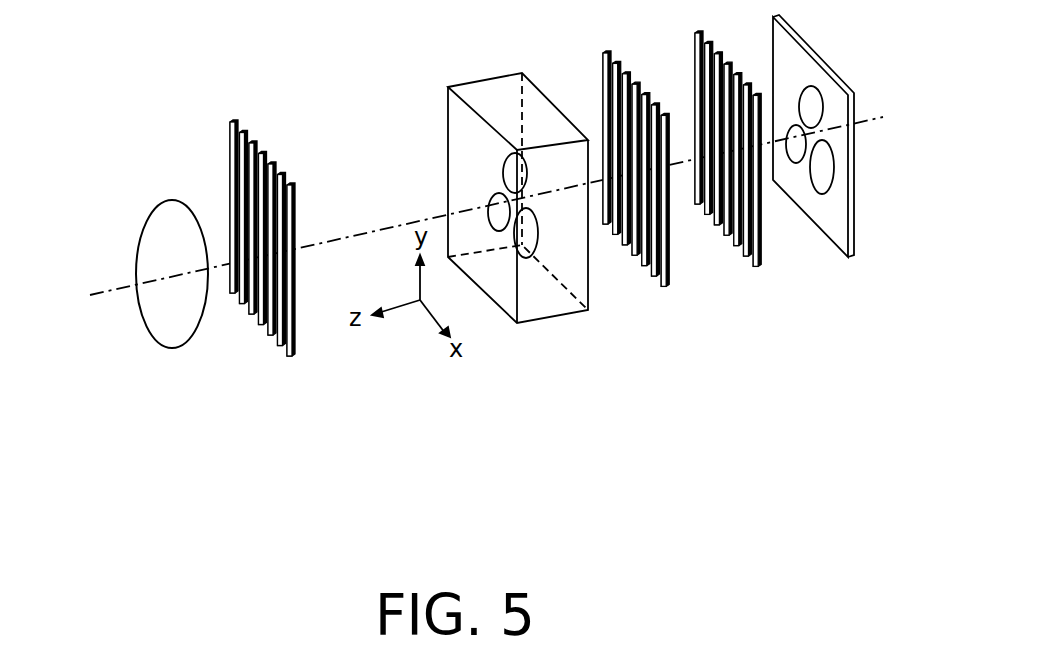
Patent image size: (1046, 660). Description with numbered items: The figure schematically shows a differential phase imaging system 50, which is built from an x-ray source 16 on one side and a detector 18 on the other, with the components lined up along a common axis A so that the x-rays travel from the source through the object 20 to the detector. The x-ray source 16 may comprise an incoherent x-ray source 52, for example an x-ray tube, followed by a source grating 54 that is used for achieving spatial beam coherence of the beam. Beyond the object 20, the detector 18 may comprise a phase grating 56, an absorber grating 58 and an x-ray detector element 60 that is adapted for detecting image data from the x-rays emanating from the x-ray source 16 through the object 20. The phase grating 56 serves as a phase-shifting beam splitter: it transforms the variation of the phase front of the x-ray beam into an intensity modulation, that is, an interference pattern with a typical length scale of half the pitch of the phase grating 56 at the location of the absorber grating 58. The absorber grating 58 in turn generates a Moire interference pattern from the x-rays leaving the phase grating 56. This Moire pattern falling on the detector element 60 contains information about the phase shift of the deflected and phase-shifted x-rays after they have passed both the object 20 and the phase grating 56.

The differential phase imaging system 50 is at (145, 73).
The x-ray source 16 is at (165, 455).
The detector 18 is at (718, 425).
The incoherent x-ray source 52 is at (152, 336).
The source grating 54 is at (277, 349).
The optical axis A is at (365, 232).
The object 20 is at (477, 265).
The phase grating 56 is at (653, 278).
The absorber grating 58 is at (740, 254).
The x-ray detector element 60 is at (845, 258).